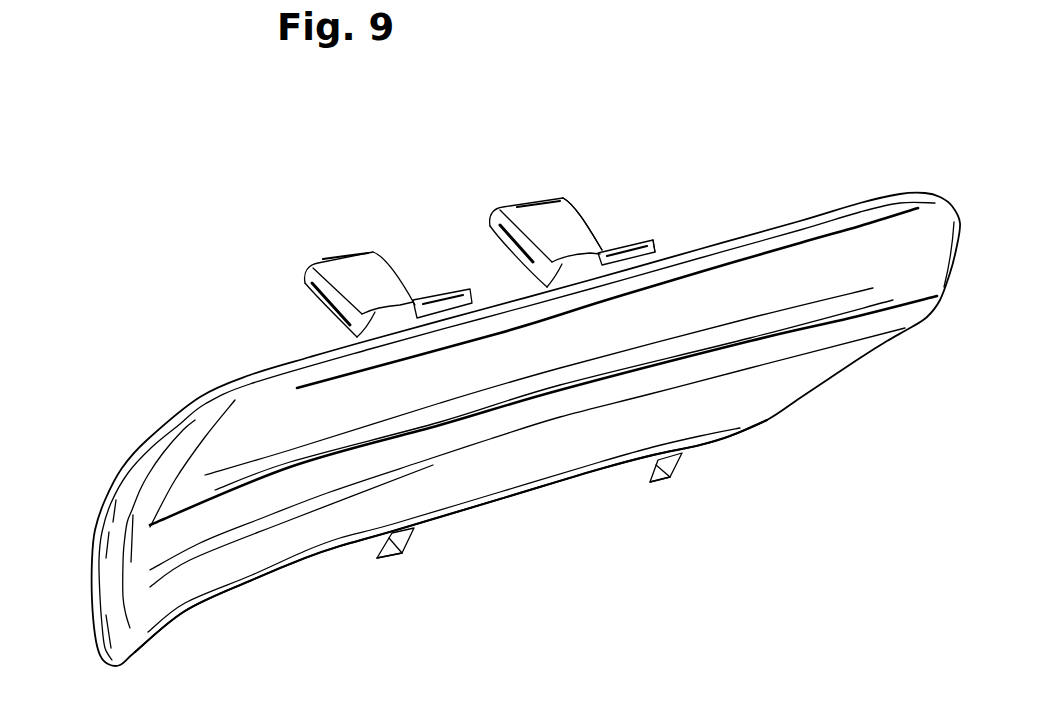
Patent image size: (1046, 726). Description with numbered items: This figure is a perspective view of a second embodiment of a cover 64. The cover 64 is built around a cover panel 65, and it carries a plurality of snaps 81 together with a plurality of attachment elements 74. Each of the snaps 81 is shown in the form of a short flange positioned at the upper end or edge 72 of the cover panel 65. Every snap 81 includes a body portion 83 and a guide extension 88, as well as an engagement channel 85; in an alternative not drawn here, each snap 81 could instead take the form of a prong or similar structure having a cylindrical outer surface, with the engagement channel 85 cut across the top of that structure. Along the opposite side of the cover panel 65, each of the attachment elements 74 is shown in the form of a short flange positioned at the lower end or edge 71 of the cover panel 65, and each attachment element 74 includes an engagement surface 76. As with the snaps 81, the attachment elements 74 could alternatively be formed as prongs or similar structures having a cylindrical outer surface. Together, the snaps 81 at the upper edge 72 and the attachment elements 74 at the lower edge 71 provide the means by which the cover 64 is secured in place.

The cover 64 is at (131, 436).
The cover panel 65 is at (322, 535).
The lower end or edge 71 is at (210, 600).
The upper end or edge 72 is at (254, 376).
The attachment element 74 is at (399, 570).
The engagement surface 76 is at (402, 543).
The snap 81 is at (343, 247).
The body portion 83 is at (637, 238).
The engagement channel 85 is at (661, 250).
The guide extension 88 is at (576, 212).